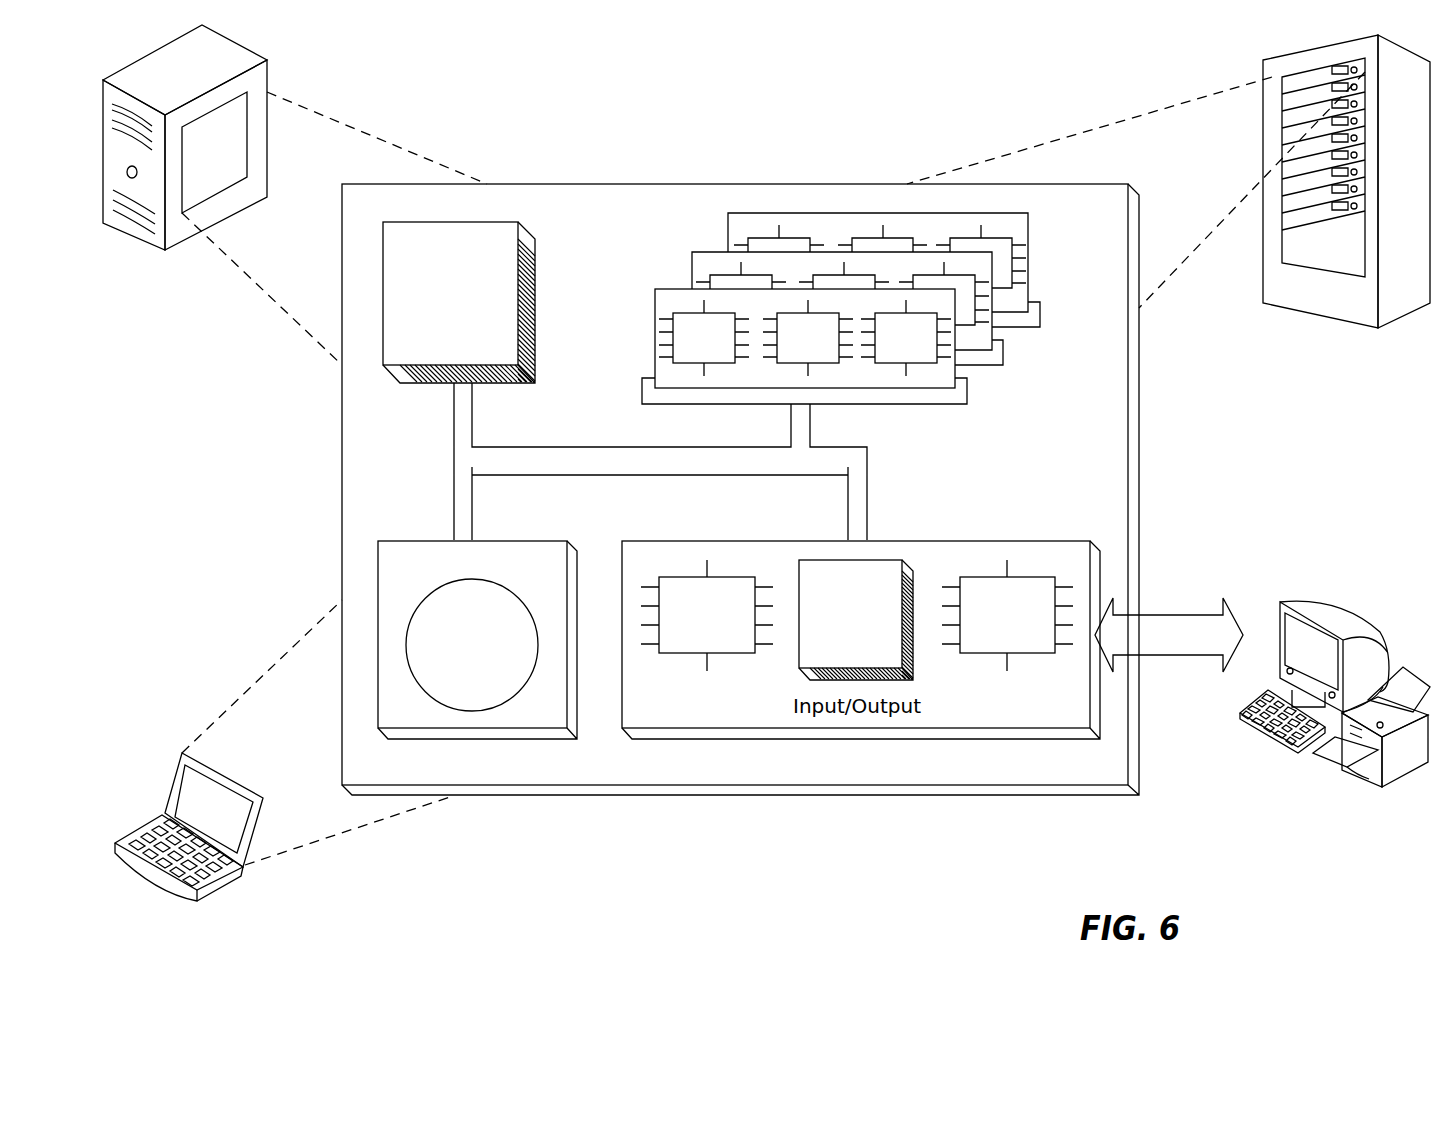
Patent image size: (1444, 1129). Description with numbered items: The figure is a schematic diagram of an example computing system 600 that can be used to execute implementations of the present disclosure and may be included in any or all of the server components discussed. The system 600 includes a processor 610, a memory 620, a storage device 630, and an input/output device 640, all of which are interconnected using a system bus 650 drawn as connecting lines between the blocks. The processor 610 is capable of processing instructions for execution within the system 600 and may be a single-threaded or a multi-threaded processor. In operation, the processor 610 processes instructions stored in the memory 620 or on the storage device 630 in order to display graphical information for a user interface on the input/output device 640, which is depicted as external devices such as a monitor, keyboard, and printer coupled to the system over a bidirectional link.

The computing system 600 is at (554, 101).
The processor 610 is at (509, 358).
The memory 620 is at (1047, 369).
The storage device 630 is at (521, 717).
The input/output device 640 is at (1280, 610).
The system bus 650 is at (653, 465).